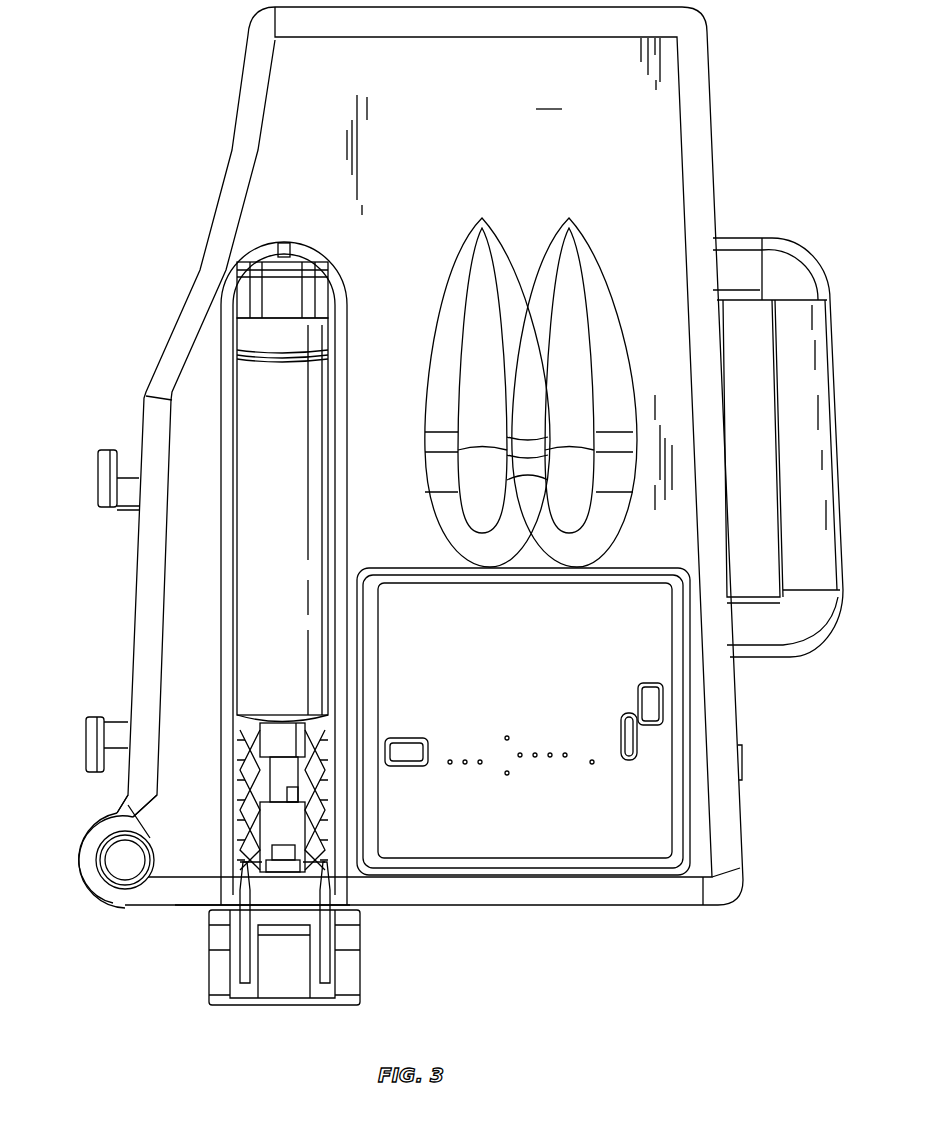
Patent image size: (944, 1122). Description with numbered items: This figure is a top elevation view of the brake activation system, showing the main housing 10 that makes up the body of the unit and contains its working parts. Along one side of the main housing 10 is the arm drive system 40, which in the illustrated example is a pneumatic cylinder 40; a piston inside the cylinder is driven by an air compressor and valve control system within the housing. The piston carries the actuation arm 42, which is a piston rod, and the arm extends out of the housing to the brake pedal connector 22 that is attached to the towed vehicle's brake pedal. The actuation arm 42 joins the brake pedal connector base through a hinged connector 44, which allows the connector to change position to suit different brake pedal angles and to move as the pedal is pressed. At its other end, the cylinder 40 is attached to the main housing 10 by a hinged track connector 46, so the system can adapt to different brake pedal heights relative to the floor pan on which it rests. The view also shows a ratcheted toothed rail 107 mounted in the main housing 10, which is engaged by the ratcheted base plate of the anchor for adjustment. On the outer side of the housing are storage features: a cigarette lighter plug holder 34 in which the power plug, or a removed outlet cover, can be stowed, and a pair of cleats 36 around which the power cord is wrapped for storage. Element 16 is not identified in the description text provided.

The main housing 10 is at (461, 457).
The access panel 16 is at (531, 680).
The brake pedal connector 22 is at (348, 967).
The cigarette lighter plug holder 34 is at (100, 896).
The cleats 36 is at (97, 490).
The arm drive system 40 is at (290, 530).
The actuation arm 42 is at (280, 773).
The hinged connector 44 is at (250, 870).
The hinged track connector 46 is at (320, 292).
The ratcheted toothed rail 107 is at (333, 757).